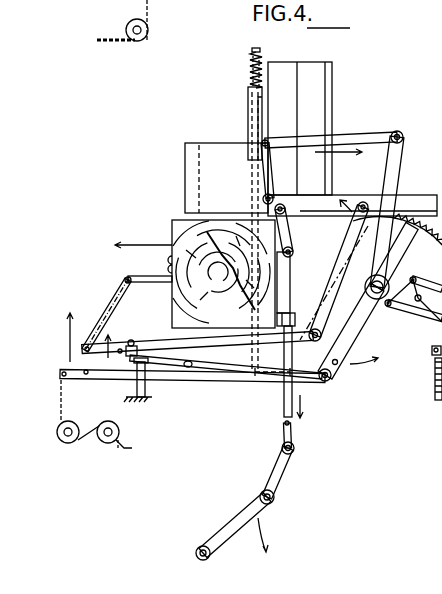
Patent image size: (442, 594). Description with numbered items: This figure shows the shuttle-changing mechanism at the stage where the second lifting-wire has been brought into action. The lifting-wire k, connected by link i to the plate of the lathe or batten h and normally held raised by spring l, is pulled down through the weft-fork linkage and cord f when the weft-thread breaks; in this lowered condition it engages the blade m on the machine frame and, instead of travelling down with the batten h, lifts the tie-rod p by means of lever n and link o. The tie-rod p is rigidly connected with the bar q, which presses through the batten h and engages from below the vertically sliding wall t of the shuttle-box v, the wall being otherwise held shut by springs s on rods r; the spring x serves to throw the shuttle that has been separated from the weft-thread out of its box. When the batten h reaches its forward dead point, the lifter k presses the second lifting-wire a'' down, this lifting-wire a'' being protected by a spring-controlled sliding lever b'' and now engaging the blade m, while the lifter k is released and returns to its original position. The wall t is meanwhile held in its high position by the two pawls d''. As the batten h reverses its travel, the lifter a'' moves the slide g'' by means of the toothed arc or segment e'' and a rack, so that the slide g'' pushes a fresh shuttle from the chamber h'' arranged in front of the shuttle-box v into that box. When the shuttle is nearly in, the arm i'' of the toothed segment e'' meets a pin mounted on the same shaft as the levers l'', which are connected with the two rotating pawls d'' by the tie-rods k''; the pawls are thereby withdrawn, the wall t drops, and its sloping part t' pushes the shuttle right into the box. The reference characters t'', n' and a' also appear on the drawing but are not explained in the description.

The cord f is at (108, 228).
The rods r is at (256, 60).
The springs s is at (251, 68).
The vertically sliding wall t is at (247, 123).
The sloping part t' is at (243, 232).
The guide rod t'' is at (338, 128).
The chamber h'' is at (300, 117).
The tie-rods k'' is at (332, 132).
The levers l'' is at (391, 212).
The pawls d'' is at (280, 173).
The shuttle-box v is at (215, 175).
The lathe or batten h is at (195, 274).
The lever n is at (352, 218).
The link o is at (292, 258).
The slide g'' is at (299, 311).
The tie-rod p is at (300, 387).
The bar q is at (272, 384).
The link i is at (339, 271).
The arm i'' is at (343, 270).
The blade m is at (365, 288).
The toothed arc or segment e'' is at (397, 252).
The spring l is at (277, 294).
The link n' is at (262, 314).
The spring-controlled sliding lever b'' is at (297, 358).
The lifting-wire k is at (198, 368).
The second lifting-wire a'' is at (192, 354).
The bar a' is at (226, 374).
The spring x is at (131, 341).